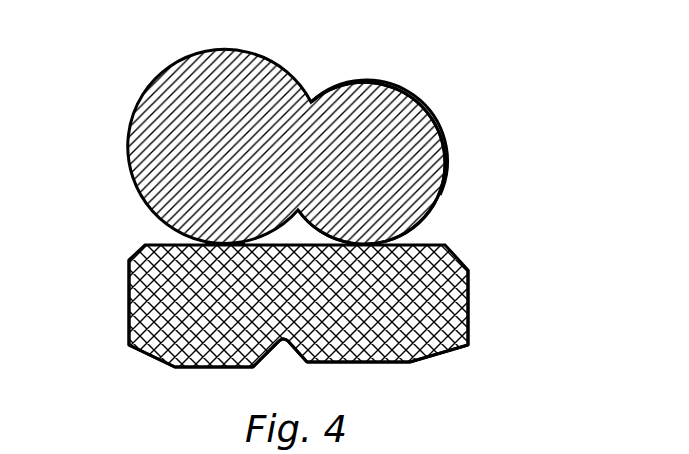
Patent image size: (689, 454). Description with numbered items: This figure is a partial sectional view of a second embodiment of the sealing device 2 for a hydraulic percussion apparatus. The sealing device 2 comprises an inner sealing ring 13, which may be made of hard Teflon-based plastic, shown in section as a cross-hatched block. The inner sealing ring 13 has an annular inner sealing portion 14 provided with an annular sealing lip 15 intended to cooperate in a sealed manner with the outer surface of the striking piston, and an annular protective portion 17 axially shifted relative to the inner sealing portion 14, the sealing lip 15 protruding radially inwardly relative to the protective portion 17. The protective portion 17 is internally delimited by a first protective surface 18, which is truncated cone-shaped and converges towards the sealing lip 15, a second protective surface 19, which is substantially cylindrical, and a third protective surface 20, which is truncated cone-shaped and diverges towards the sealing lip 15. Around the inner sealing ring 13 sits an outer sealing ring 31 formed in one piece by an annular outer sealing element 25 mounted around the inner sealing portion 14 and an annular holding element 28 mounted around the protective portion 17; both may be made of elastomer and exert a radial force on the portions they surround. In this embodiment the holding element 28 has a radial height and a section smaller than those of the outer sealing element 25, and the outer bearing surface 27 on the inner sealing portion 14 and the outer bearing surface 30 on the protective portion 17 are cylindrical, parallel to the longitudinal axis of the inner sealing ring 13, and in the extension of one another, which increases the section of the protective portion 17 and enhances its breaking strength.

The sealing device 2 is at (313, 217).
The inner sealing ring 13 is at (288, 333).
The inner sealing portion 14 is at (134, 312).
The sealing lip 15 is at (232, 355).
The protective portion 17 is at (438, 300).
The first protective surface 18 is at (432, 357).
The second protective surface 19 is at (343, 364).
The third protective surface 20 is at (290, 352).
The outer sealing element 25 is at (183, 90).
The outer bearing surface 27 is at (222, 238).
The holding element 28 is at (400, 120).
The outer bearing surface 30 is at (408, 220).
The outer sealing ring 31 is at (318, 128).